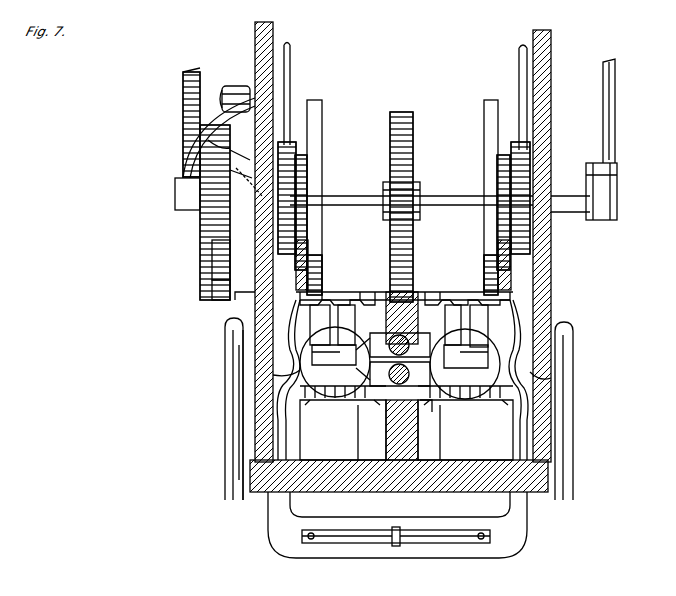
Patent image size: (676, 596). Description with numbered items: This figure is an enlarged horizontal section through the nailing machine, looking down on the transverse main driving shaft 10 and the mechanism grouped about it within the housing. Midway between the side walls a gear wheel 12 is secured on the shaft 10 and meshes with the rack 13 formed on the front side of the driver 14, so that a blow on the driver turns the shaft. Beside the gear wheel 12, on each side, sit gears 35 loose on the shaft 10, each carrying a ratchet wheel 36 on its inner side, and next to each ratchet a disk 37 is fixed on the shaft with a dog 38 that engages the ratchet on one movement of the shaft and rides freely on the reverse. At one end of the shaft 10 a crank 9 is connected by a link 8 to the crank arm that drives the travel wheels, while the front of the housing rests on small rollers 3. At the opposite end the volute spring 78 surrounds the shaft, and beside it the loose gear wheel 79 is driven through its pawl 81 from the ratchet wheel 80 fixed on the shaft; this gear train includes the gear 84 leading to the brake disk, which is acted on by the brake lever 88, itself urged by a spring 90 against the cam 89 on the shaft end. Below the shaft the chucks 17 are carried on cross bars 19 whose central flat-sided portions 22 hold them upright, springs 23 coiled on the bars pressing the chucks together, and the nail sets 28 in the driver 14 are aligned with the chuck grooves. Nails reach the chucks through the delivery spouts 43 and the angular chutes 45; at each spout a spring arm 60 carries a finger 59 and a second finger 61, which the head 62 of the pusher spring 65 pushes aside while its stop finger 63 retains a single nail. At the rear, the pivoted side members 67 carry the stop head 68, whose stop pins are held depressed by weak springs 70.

The small rollers 3 is at (233, 453).
The link 8 is at (612, 124).
The crank 9 is at (592, 170).
The main driving shaft 10 is at (428, 200).
The gear wheel 12 is at (408, 114).
The rack 13 is at (414, 268).
The driver 14 is at (429, 360).
The chucks 17 is at (392, 354).
The cross bars 19 is at (254, 392).
The central flat-sided portions 22 is at (388, 376).
The springs 23 is at (406, 430).
The nail sets 28 is at (430, 415).
The gears 35 is at (292, 142).
The ratchet wheel 36 is at (308, 176).
The disks 37 is at (323, 190).
The dog 38 is at (318, 246).
The delivery spouts 43 is at (347, 292).
The chutes 45 is at (398, 432).
The finger 59 is at (369, 289).
The spring arm 60 is at (322, 284).
The second finger 61 is at (577, 373).
The head 62 is at (401, 325).
The stop finger 63 is at (400, 326).
The pusher arm spring 65 is at (436, 300).
The side member 67 is at (291, 66).
The stop block or head 68 is at (486, 553).
The weak springs 70 is at (345, 543).
The spring 78 is at (210, 244).
The gear wheel 79 is at (235, 290).
The ratchet wheel 80 is at (208, 214).
The pawl 81 is at (212, 262).
The gear 84 is at (184, 108).
The brake lever 88 is at (184, 132).
The cam 89 is at (188, 192).
The spring 90 is at (246, 88).